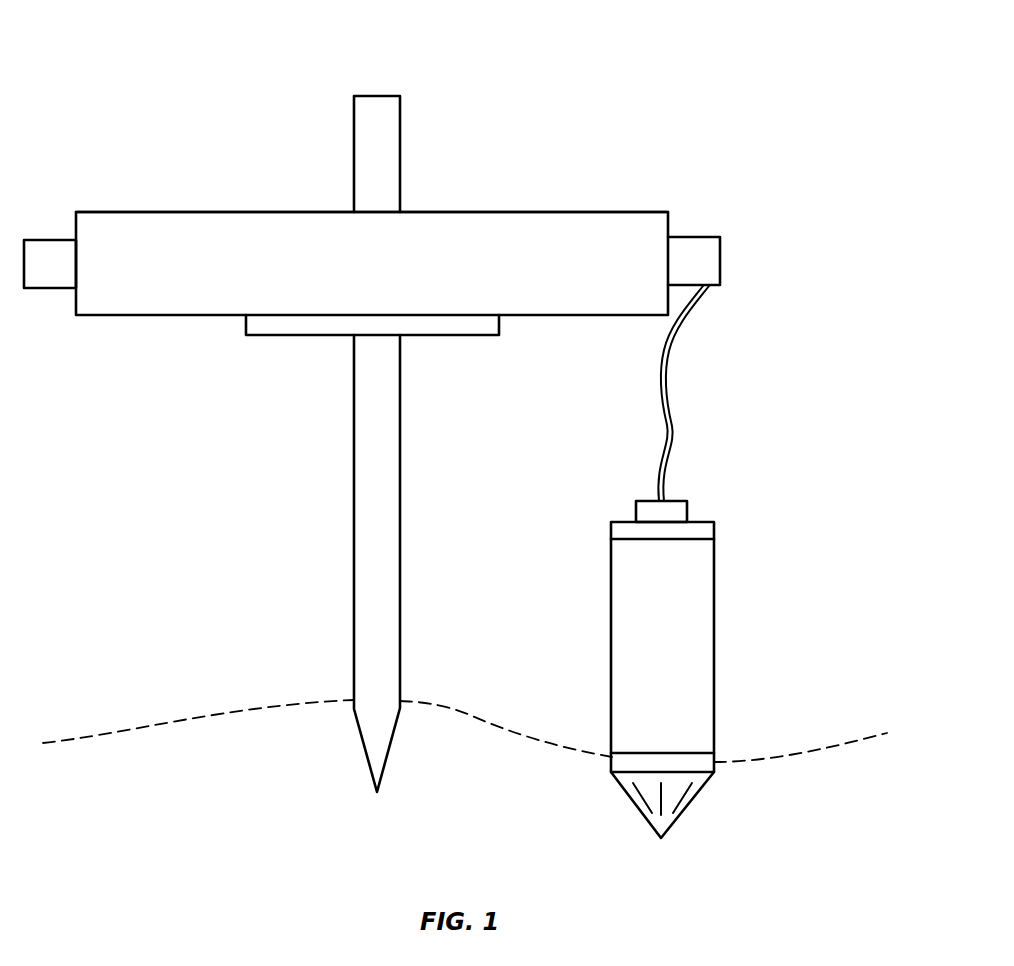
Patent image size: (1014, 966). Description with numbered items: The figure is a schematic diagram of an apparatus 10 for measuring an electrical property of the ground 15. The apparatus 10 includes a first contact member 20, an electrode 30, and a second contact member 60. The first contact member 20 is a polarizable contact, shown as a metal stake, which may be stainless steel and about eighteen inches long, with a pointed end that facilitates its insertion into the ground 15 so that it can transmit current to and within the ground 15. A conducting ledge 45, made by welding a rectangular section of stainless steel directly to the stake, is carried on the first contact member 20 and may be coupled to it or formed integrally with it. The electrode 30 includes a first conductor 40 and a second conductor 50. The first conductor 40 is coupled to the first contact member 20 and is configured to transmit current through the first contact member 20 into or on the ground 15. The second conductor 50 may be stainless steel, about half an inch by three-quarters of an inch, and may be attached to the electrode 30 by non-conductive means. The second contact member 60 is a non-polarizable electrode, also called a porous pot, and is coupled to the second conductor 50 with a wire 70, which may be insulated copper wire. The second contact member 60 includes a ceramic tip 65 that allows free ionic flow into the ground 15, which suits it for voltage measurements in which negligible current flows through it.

The apparatus 10 is at (650, 66).
The ground 15 is at (112, 752).
The first contact member 20 is at (343, 444).
The electrode 30 is at (512, 193).
The first conductor 40 is at (372, 193).
The conducting ledge 45 is at (363, 346).
The second conductor 50 is at (708, 243).
The second contact member 60 is at (757, 593).
The ceramic tip 65 is at (682, 805).
The wire 70 is at (694, 393).